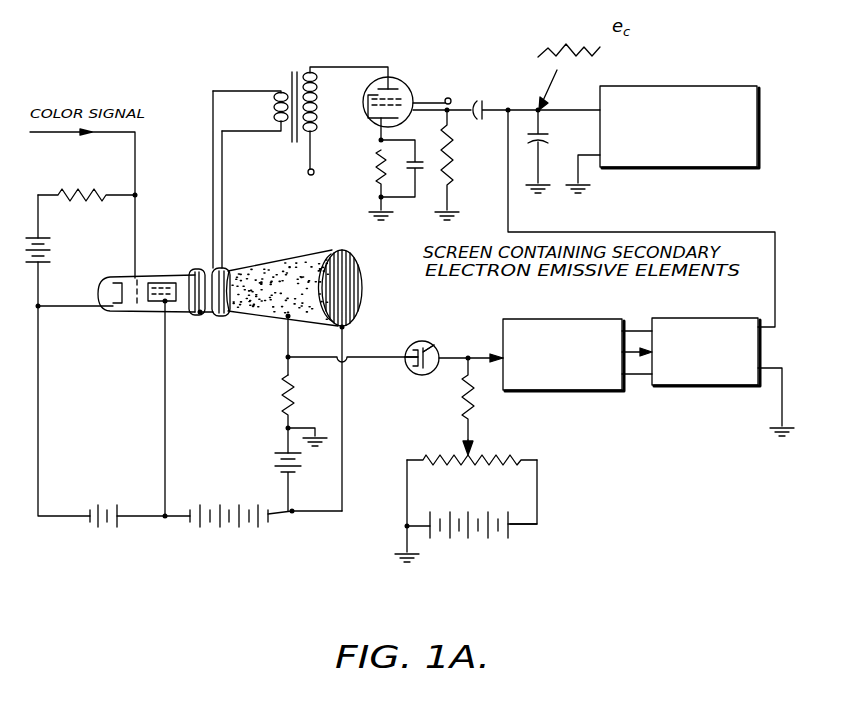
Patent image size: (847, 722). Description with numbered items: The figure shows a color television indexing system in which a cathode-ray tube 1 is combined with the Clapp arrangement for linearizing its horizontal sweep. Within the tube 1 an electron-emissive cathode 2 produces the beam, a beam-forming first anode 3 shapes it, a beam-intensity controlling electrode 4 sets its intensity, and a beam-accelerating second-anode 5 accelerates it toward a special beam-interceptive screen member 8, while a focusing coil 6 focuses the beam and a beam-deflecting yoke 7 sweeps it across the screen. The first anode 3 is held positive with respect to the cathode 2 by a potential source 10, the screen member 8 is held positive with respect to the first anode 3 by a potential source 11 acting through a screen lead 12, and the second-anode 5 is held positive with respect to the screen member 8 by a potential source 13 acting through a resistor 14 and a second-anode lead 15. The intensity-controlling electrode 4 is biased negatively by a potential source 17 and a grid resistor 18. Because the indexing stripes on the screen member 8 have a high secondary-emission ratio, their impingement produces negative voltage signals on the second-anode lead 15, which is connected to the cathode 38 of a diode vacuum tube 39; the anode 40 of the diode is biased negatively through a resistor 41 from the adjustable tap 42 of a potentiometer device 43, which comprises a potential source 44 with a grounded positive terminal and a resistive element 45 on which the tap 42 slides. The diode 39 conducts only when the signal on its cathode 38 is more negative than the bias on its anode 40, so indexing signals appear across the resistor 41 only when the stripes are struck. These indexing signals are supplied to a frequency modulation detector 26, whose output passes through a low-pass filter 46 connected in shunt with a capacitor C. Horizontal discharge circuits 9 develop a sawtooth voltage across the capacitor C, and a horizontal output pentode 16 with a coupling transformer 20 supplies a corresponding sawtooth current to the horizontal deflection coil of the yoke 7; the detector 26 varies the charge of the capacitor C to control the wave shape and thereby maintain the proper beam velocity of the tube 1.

The cathode-ray tube 1 is at (126, 312).
The electron-emissive cathode 2 is at (112, 296).
The beam-forming first anode 3 is at (157, 303).
The beam-intensity controlling electrode 4 is at (134, 280).
The beam-accelerating second-anode 5 is at (274, 263).
The focusing coil 6 is at (201, 316).
The beam-deflecting yoke 7 is at (227, 318).
The beam-interceptive screen member 8 is at (352, 284).
The horizontal discharge circuits 9 is at (676, 86).
The potential source 10 is at (98, 502).
The potential source 11 is at (232, 498).
The screen lead 12 is at (340, 376).
The potential source 13 is at (272, 466).
The resistor 14 is at (280, 398).
The second-anode lead 15 is at (282, 340).
The horizontal output pentode 16 is at (408, 84).
The potential source 17 is at (32, 270).
The grid resistor 18 is at (84, 193).
The coupling transformer 20 is at (292, 142).
The frequency modulation detector 26 is at (560, 319).
The cathode 38 is at (421, 342).
The diode vacuum tube 39 is at (411, 373).
The anode 40 is at (436, 352).
The resistor 41 is at (478, 396).
The adjustable tap 42 is at (462, 440).
The potentiometer device 43 is at (480, 564).
The potential source 44 is at (505, 536).
The resistive element 45 is at (490, 466).
The low-pass filter 46 is at (718, 318).
The capacitor C is at (548, 142).